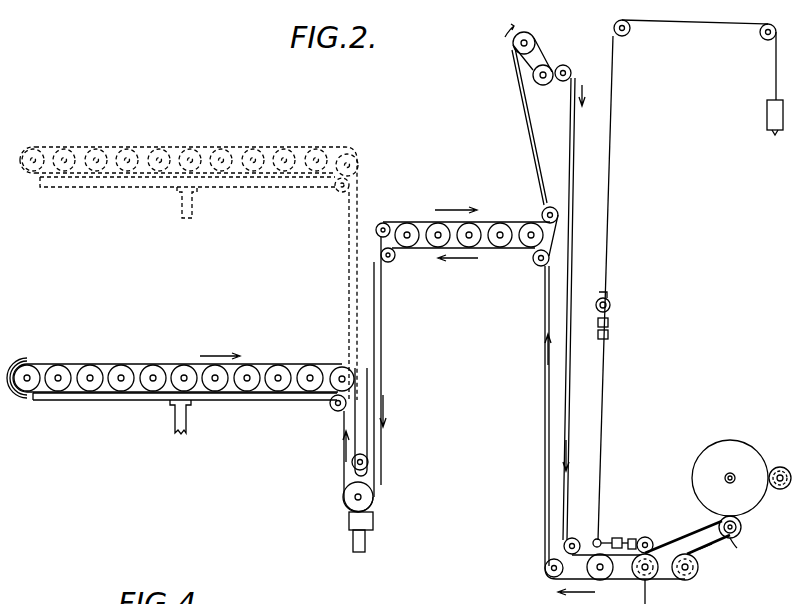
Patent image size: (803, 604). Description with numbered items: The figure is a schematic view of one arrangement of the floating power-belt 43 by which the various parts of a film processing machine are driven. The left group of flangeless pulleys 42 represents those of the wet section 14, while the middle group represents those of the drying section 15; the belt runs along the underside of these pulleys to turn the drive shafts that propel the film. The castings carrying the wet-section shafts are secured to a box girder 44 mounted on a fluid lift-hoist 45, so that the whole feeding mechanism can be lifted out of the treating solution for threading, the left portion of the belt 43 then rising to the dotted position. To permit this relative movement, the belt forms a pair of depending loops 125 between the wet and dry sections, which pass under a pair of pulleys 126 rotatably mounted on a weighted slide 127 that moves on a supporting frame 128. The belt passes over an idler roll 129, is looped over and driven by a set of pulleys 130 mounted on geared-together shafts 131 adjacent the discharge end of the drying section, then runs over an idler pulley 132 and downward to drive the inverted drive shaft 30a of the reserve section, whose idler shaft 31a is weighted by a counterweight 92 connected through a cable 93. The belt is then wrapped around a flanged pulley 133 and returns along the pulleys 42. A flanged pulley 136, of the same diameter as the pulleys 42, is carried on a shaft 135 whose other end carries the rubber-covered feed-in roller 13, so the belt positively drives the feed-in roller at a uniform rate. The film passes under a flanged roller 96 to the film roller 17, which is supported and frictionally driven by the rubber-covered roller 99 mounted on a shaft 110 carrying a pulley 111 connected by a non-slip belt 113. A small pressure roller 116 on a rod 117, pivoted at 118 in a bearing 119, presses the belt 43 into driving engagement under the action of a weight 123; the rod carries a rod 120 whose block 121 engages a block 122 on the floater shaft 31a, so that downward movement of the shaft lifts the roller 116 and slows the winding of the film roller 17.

The feed-in roller 13 is at (32, 366).
The wet section 14 is at (189, 273).
The drying section 15 is at (459, 355).
The film roller 17 is at (727, 445).
The drive shaft 30a is at (600, 575).
The idler shaft 31a is at (610, 305).
The flangeless pulley 42 is at (136, 366).
The floating power-belt 43 is at (548, 419).
The box girder 44 is at (94, 401).
The fluid lift-hoist 45 is at (172, 430).
The counterweight 92 is at (767, 112).
The cable 93 is at (738, 26).
The flanged roller 96 is at (780, 467).
The rubber covered roller 99 is at (742, 527).
The shaft 110 is at (723, 543).
The pulley 111 is at (736, 541).
The non-slip belt 113 is at (718, 562).
The pressure roller 116 is at (651, 540).
The rod 117 is at (598, 538).
The pivot 118 is at (617, 537).
The bearing 119 is at (636, 537).
The rod 120 is at (601, 390).
The block 121 is at (608, 337).
The block 122 is at (609, 324).
The weight 123 is at (636, 537).
The depending loops 125 is at (368, 440).
The pulleys 126 is at (368, 470).
The weighted slide 127 is at (375, 518).
The supporting frame 128 is at (353, 542).
The idler roll 129 is at (545, 209).
The pulleys 130 is at (532, 38).
The shafts 131 is at (535, 75).
The idler pulley 132 is at (568, 66).
The flanged pulley 133 is at (682, 581).
The shaft 135 is at (19, 396).
The flanged pulley 136 is at (14, 362).